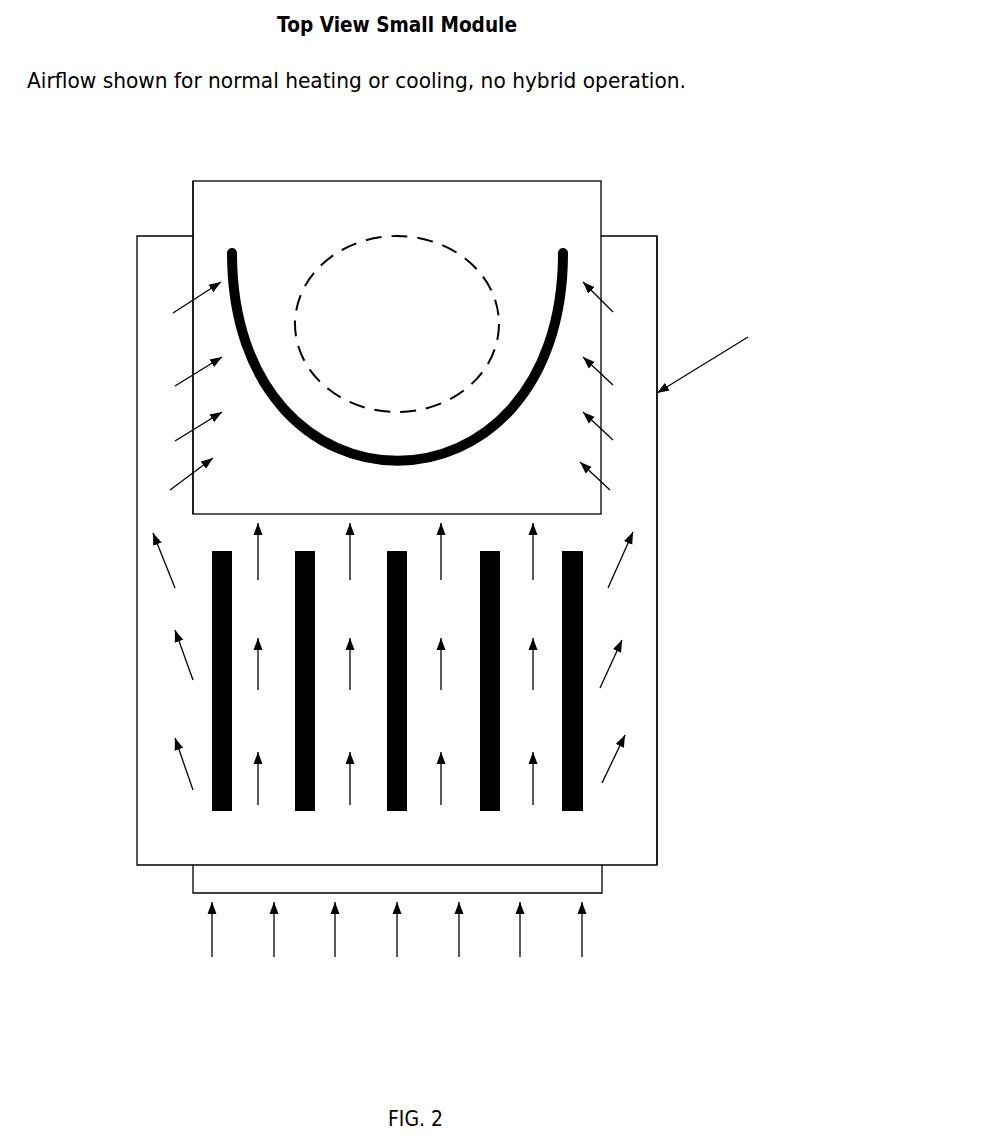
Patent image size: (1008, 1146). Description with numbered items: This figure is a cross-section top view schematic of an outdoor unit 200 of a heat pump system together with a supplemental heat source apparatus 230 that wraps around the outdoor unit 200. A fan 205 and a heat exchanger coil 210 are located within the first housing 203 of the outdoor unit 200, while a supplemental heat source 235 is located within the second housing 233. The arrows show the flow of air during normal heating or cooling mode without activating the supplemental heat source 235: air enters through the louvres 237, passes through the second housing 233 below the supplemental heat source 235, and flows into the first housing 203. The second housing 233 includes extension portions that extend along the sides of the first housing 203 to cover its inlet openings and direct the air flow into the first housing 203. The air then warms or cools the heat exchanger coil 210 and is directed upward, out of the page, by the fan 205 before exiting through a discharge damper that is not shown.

The outdoor unit 200 is at (602, 203).
The first housing 203 is at (193, 208).
The fan 205 is at (322, 263).
The heat exchanger coil 210 is at (555, 273).
The supplemental heat source apparatus 230 is at (685, 450).
The second housing 233 is at (657, 607).
The supplemental heat source 235 is at (584, 790).
The louvres 237 is at (602, 878).